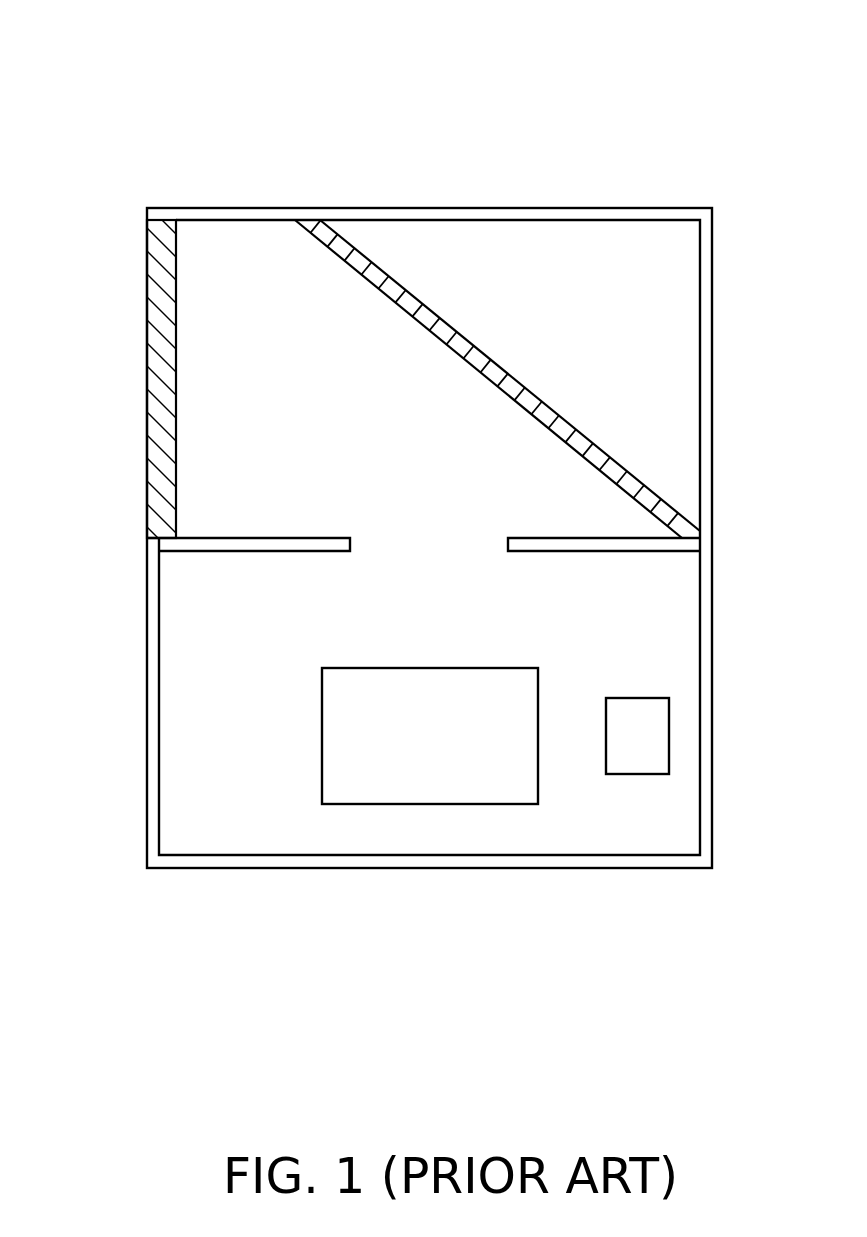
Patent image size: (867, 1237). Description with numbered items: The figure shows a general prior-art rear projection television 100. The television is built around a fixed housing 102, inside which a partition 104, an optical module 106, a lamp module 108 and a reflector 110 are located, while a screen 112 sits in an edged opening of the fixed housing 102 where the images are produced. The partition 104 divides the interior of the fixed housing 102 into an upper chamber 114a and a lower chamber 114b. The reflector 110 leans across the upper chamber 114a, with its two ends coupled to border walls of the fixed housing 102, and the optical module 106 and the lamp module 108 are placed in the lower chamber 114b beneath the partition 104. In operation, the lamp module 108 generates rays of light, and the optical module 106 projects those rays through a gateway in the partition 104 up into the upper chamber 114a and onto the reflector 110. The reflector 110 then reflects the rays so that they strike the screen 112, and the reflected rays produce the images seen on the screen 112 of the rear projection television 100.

The rear projection television 100 is at (786, 43).
The fixed housing 102 is at (610, 218).
The partition 104 is at (593, 551).
The optical module 106 is at (377, 804).
The lamp module 108 is at (669, 737).
The reflector 110 is at (560, 417).
The screen 112 is at (153, 348).
The upper chamber 114a is at (555, 268).
The lower chamber 114b is at (637, 647).